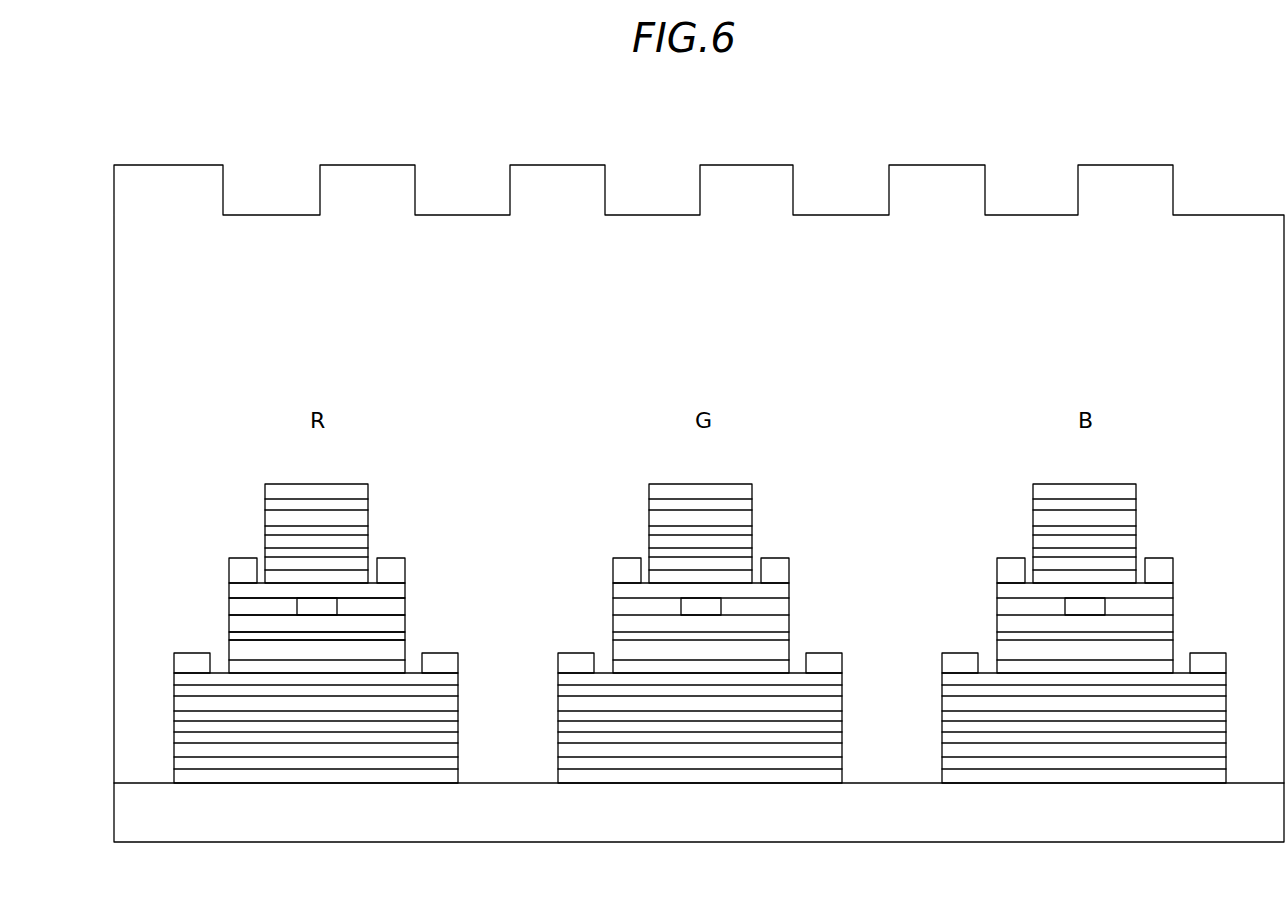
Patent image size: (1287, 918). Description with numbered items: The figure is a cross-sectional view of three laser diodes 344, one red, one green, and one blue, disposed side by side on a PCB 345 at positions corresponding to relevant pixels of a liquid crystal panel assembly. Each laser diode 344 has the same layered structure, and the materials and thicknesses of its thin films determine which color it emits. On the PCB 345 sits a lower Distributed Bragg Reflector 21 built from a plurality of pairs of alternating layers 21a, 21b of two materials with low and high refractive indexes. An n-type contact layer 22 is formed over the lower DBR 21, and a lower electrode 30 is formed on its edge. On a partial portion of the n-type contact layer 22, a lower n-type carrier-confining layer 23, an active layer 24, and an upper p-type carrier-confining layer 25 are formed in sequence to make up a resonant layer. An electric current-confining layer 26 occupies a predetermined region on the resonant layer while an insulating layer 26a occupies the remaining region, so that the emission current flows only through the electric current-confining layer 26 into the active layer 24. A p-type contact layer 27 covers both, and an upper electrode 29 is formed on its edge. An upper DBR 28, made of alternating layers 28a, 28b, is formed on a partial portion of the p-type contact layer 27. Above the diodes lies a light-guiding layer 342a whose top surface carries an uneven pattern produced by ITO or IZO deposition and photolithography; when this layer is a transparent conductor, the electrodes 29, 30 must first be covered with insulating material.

The light-guiding layer 342a is at (1228, 213).
The laser diode 344 is at (238, 427).
The PCB 345 is at (718, 820).
The lower Distributed Bragg Reflector 21 is at (517, 658).
The alternating layer of the lower DBR 21a is at (448, 697).
The alternating layer of the lower DBR 21b is at (448, 690).
The n-type contact layer 22 is at (185, 678).
The lower n-type carrier-confining layer 23 is at (398, 652).
The active layer 24 is at (238, 640).
The upper p-type carrier-confining layer 25 is at (238, 625).
The electric current-confining layer 26 is at (327, 607).
The insulating layer 26a is at (240, 608).
The p-type contact layer 27 is at (392, 591).
The upper Distributed Bragg Reflector 28 is at (437, 466).
The alternating layer of the upper DBR 28a is at (362, 490).
The alternating layer of the upper DBR 28b is at (358, 503).
The upper electrode 29 is at (245, 568).
The lower electrode 30 is at (185, 662).